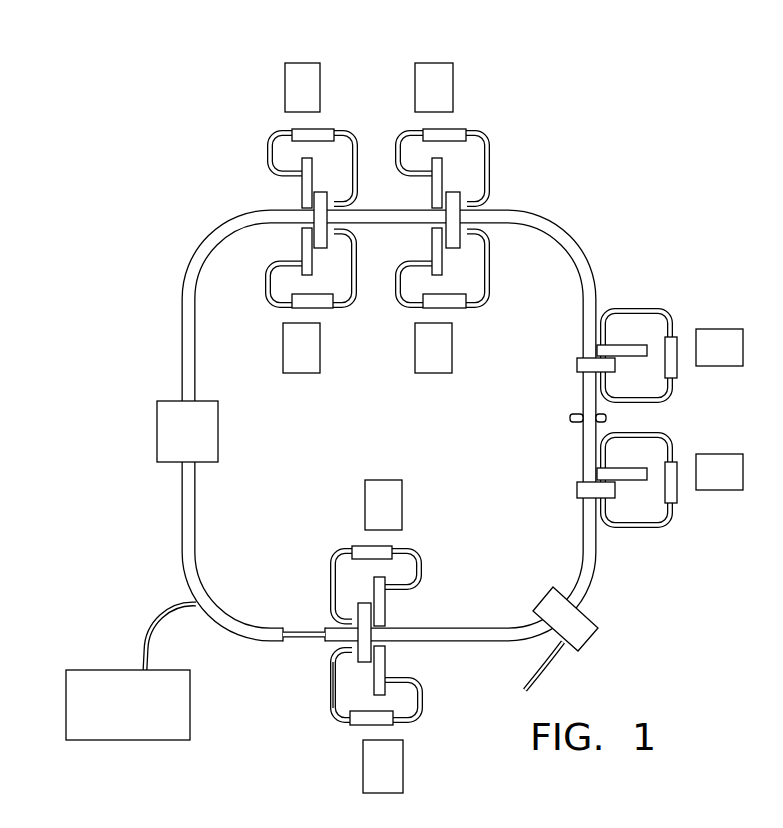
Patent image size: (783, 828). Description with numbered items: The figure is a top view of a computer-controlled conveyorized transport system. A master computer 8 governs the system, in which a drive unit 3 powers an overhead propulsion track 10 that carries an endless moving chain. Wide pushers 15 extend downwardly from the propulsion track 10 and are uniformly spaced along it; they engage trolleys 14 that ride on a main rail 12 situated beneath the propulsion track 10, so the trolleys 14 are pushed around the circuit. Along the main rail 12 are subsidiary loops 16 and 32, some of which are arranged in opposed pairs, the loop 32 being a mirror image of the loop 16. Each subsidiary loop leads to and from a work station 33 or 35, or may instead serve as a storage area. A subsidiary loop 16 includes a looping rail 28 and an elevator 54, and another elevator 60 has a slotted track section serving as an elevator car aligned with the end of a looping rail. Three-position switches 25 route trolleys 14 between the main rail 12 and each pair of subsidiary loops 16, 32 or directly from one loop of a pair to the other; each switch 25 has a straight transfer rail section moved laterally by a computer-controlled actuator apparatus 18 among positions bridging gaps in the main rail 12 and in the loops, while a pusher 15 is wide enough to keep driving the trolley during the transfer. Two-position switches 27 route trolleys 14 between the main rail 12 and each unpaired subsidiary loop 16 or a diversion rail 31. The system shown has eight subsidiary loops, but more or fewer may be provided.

The drive unit 3 is at (219, 417).
The master computer 8 is at (191, 705).
The propulsion track 10 is at (586, 453).
The main rail 12 is at (304, 642).
The trolley 14 is at (575, 419).
The pusher 15 is at (573, 416).
The subsidiary loop 16 is at (342, 127).
The actuator apparatus 18 is at (363, 617).
The three-position switch 25 is at (292, 197).
The two-position switch 27 is at (610, 340).
The looping rail 28 is at (330, 692).
The diversion rail 31 is at (550, 660).
The subsidiary loop 32 is at (349, 311).
The work station 33 is at (297, 62).
The work station 35 is at (310, 373).
The elevator 54 is at (378, 663).
The elevator 60 is at (386, 605).